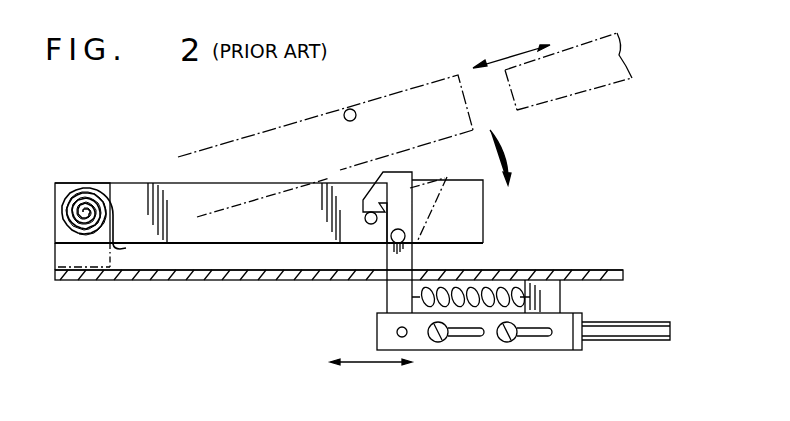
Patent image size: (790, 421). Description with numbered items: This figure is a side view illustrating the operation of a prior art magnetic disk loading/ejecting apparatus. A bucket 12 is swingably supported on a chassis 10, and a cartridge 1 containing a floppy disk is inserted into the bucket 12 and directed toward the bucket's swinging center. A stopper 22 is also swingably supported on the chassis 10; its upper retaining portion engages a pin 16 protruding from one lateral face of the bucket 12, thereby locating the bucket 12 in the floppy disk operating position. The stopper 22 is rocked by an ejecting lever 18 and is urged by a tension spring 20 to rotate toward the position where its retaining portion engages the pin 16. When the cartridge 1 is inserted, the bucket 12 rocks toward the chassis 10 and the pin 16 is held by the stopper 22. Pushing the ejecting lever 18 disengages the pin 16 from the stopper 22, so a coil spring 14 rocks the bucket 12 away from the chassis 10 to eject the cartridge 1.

The cartridge 1 is at (600, 82).
The chassis 10 is at (584, 270).
The bucket 12 is at (474, 205).
The coil spring 14 is at (88, 185).
The pin 16 is at (365, 215).
The ejecting lever 18 is at (483, 351).
The tension spring 20 is at (497, 286).
The stopper 22 is at (390, 295).